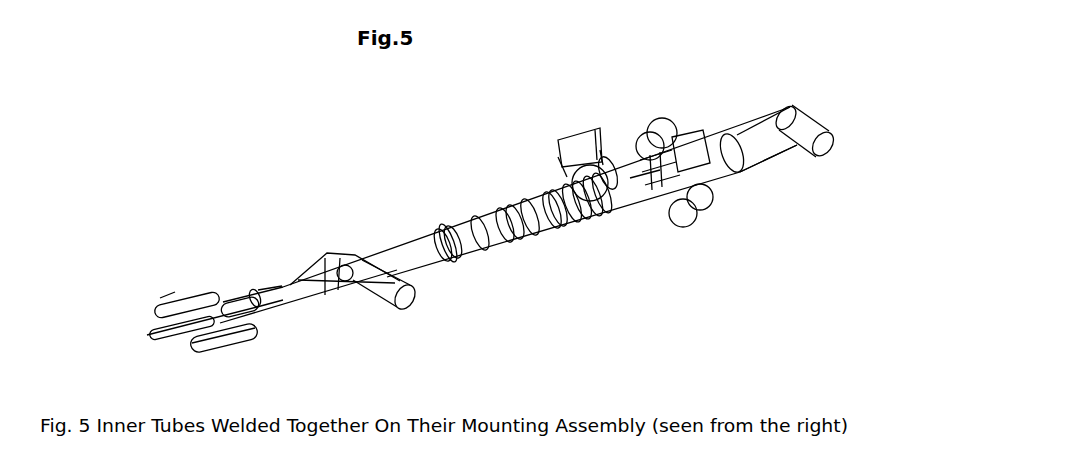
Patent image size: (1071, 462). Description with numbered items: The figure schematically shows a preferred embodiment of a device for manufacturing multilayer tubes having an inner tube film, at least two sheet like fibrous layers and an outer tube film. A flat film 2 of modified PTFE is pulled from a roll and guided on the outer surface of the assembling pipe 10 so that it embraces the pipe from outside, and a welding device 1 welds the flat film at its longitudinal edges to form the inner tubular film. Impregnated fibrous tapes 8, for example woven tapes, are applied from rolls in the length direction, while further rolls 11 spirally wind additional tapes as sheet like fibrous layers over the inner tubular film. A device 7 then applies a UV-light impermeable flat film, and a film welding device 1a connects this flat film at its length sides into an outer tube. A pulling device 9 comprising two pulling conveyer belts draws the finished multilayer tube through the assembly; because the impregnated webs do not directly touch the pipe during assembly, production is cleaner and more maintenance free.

The welding device 1 is at (508, 185).
The film welding device 1a is at (230, 271).
The flat film 2 is at (761, 99).
The device to apply a UV-light impermeable flat film 7 is at (326, 244).
The tapes 8 is at (641, 140).
The pulling device 9 is at (185, 289).
The assembling pipe 10 is at (766, 180).
The rolls 11 is at (542, 140).